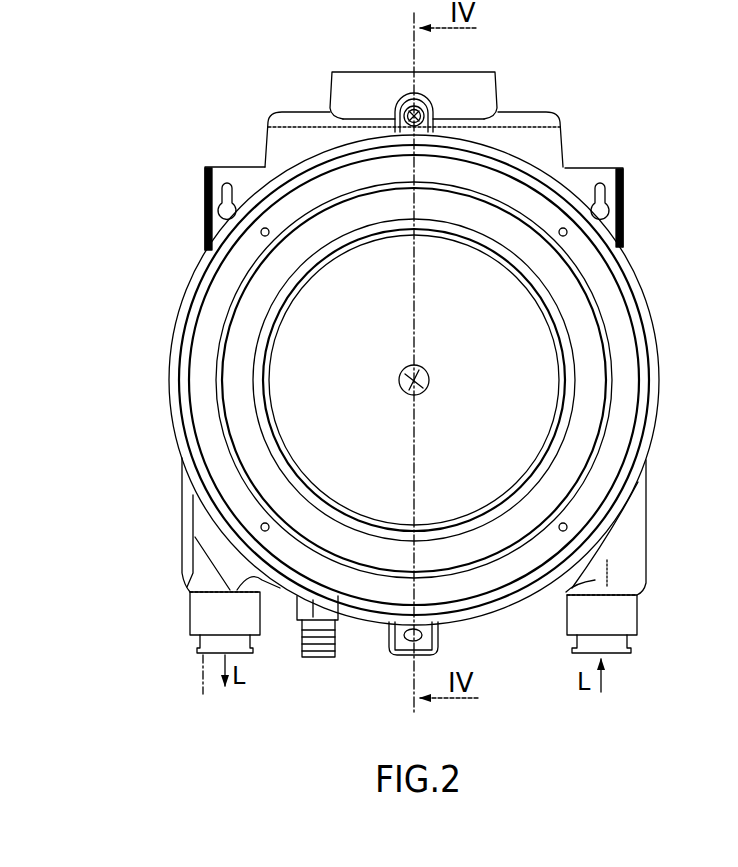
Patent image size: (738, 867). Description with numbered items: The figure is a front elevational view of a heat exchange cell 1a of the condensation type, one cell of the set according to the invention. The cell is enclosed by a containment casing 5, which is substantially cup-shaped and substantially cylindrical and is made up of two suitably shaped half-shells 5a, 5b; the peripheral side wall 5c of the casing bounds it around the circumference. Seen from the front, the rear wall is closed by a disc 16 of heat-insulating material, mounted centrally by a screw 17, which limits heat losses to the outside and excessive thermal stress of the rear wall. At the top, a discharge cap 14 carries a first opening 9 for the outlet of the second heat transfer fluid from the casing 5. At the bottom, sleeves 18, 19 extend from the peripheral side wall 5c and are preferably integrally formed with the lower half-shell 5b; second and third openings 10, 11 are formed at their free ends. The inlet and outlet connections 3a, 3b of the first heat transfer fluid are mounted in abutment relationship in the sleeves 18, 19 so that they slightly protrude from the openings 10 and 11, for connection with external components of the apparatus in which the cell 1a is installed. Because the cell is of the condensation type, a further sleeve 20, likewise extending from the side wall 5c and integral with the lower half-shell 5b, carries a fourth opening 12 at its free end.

The heat exchange cell 1a is at (605, 138).
The inlet connection 3a is at (625, 640).
The outlet connection 3b is at (209, 686).
The containment casing 5 is at (652, 300).
The half-shell 5a is at (625, 253).
The lower half-shell 5b is at (647, 463).
The peripheral side wall 5c is at (662, 426).
The first opening 9 is at (357, 72).
The second opening 10 is at (573, 638).
The third opening 11 is at (253, 640).
The fourth opening 12 is at (308, 660).
The discharge cap 14 is at (297, 122).
The disc 16 is at (505, 389).
The screw 17 is at (397, 381).
The sleeve 18 is at (612, 616).
The sleeve 19 is at (200, 612).
The sleeve 20 is at (337, 633).